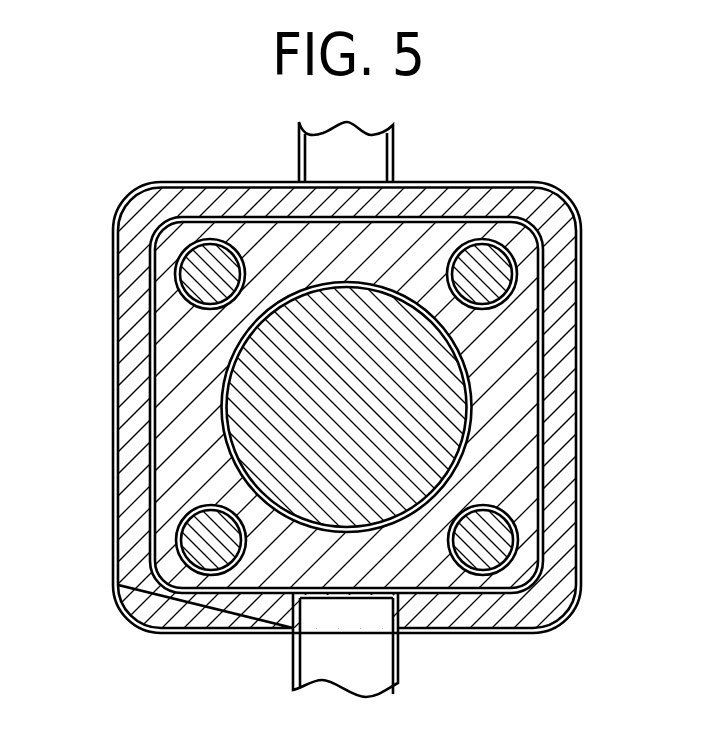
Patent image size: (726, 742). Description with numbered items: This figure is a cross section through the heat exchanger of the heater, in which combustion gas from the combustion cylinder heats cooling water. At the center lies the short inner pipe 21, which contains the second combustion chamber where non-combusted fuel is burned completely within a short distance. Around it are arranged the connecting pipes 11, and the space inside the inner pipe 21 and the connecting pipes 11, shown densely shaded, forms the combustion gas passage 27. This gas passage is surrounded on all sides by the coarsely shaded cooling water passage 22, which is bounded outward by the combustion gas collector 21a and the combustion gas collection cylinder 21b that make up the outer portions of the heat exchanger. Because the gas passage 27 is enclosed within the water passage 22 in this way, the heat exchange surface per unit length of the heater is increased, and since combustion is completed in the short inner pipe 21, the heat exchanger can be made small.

The connecting pipes 11 is at (207, 239).
The inner pipe 21 is at (363, 437).
The combustion gas collector 21a is at (582, 353).
The combustion gas collection cylinder 21b is at (545, 423).
The cooling water passage 22 is at (263, 582).
The combustion gas passage 27 is at (205, 282).